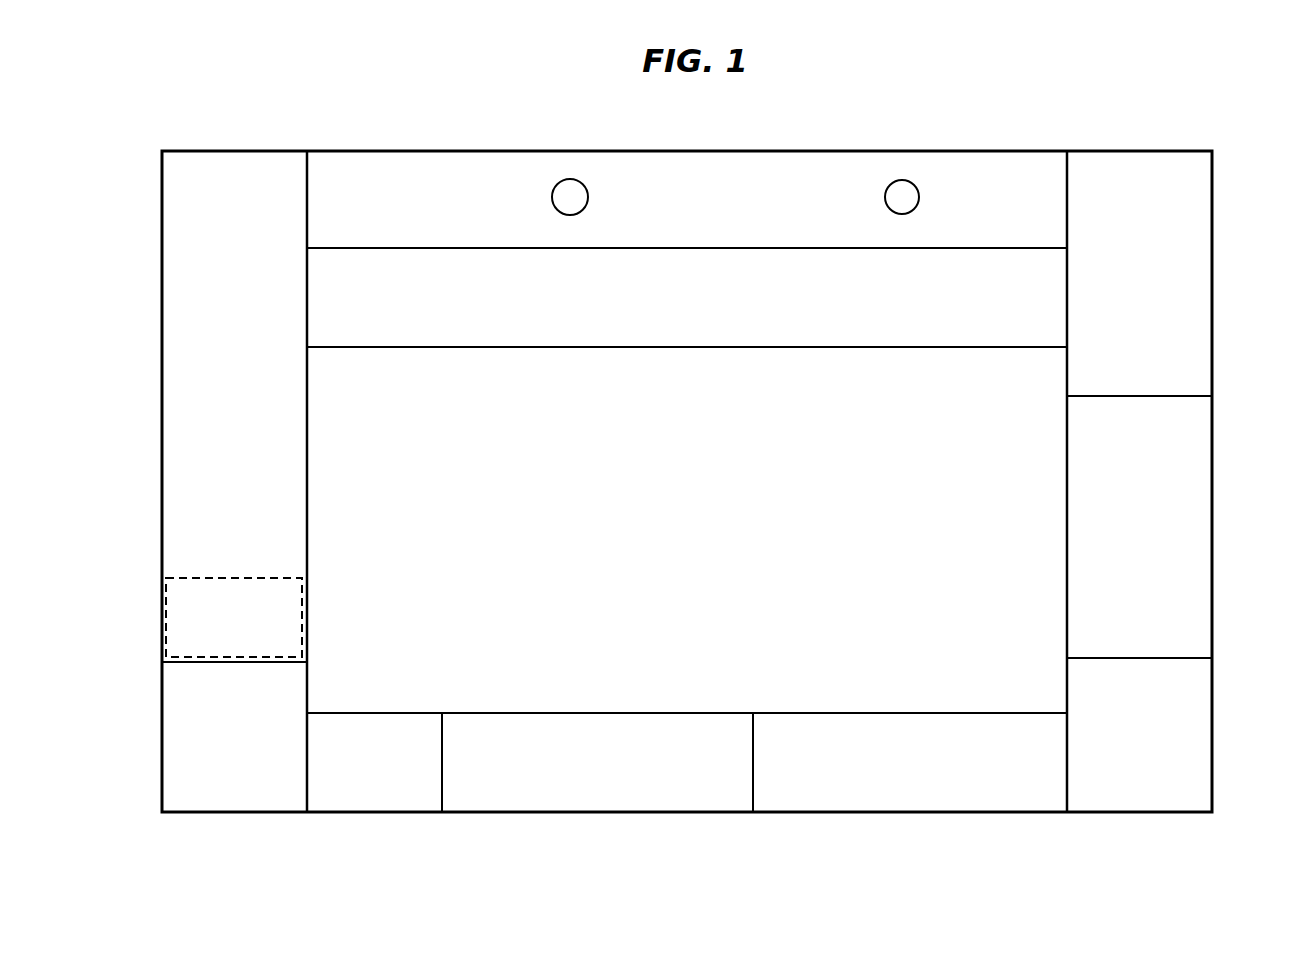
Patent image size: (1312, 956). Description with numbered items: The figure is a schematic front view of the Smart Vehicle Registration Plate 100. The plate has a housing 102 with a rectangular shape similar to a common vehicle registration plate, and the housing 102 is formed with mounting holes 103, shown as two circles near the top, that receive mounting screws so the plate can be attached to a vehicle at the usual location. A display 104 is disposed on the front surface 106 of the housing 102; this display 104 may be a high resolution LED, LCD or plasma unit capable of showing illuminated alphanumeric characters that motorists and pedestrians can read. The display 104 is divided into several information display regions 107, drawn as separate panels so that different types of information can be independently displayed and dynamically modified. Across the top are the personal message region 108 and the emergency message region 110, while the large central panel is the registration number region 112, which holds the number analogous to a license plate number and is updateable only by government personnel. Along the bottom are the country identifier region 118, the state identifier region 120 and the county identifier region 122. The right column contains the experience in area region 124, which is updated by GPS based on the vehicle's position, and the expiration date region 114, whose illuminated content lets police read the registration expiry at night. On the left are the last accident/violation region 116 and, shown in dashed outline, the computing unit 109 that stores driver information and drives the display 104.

The Smart Vehicle Registration Plate 100 is at (1197, 88).
The housing 102 is at (513, 148).
The mounting holes 103 is at (567, 196).
The display 104 is at (357, 165).
The front surface 106 is at (438, 165).
The information display regions 107 is at (329, 170).
The personal message region 108 is at (742, 168).
The computing unit 109 is at (178, 620).
The emergency message region 110 is at (953, 290).
The registration number region 112 is at (1002, 472).
The expiration date region 114 is at (1200, 742).
The last accident/violation region 116 is at (178, 741).
The country identifier region 118 is at (390, 798).
The state identifier region 120 is at (680, 790).
The county identifier region 122 is at (885, 797).
The experience in area region 124 is at (1198, 440).